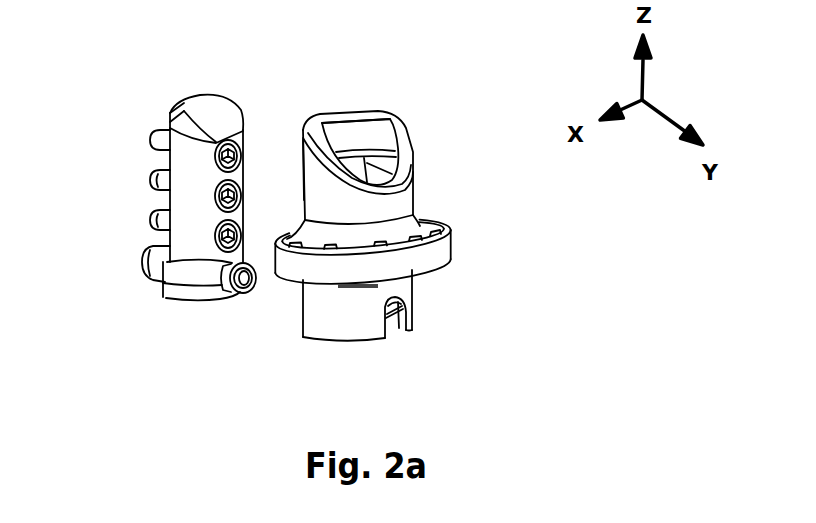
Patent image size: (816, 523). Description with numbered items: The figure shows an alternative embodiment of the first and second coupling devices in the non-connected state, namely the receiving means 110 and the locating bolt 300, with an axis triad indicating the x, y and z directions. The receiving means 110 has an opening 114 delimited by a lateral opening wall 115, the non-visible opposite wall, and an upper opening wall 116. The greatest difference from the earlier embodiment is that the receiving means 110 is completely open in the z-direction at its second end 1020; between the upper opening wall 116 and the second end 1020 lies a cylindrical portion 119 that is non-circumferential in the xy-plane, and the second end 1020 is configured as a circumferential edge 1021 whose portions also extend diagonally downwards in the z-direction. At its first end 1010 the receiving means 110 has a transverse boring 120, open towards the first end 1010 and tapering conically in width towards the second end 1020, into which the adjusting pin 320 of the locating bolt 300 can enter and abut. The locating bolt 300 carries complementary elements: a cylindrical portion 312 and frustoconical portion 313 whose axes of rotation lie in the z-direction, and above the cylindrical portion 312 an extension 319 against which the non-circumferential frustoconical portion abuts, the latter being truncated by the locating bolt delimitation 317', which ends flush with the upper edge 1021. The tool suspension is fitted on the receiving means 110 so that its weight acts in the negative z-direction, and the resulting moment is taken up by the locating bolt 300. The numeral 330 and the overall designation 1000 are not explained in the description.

The locating bolt 300 is at (153, 308).
The cylindrical portion 312 is at (183, 199).
The frustoconical portion 313 is at (182, 275).
The locating bolt delimitation 317' is at (230, 87).
The extension 319 is at (170, 116).
The adjusting pin 320 is at (247, 300).
The collar 330 is at (137, 260).
The bone anchor head assembly 1000 is at (388, 330).
The receiving means 110 is at (416, 127).
The opening 114 is at (303, 183).
The lateral opening wall 115 is at (397, 172).
The upper opening wall 116 is at (362, 150).
The cylindrical portion 119 is at (337, 131).
The second end 1020 is at (373, 104).
The circumferential edge 1021 is at (403, 184).
The first end 1010 is at (342, 353).
The transverse boring 120 is at (395, 326).